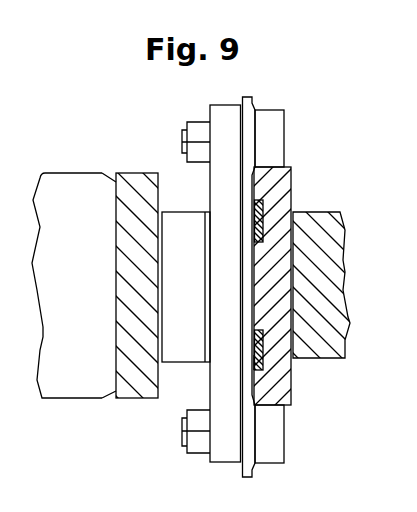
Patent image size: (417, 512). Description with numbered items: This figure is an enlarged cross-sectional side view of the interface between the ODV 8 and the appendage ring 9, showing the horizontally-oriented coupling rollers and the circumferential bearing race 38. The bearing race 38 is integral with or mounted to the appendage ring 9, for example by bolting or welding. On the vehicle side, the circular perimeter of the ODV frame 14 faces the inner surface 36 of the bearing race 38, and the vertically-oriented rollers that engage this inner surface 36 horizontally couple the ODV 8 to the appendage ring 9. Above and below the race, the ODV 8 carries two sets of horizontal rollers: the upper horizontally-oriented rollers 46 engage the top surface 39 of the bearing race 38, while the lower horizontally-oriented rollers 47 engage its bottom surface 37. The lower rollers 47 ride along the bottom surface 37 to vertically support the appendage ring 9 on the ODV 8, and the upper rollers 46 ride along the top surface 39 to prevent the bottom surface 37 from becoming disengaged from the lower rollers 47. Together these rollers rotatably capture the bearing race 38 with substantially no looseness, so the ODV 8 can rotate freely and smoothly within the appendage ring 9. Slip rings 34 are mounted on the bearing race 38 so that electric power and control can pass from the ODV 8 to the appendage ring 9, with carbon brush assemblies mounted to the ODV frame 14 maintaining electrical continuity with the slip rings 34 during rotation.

The ODV 8 is at (72, 398).
The ODV frame 14 is at (137, 398).
The inner surface of bearing race 36 is at (252, 192).
The bottom surface of bearing race 37 is at (290, 405).
The horizontally-oriented rollers 46 is at (287, 120).
The horizontally-oriented rollers 47 is at (284, 447).
The top surface of bearing race 39 is at (292, 167).
The slip rings 34 is at (263, 207).
The bearing race 38 is at (258, 363).
The appendage ring 9 is at (345, 272).